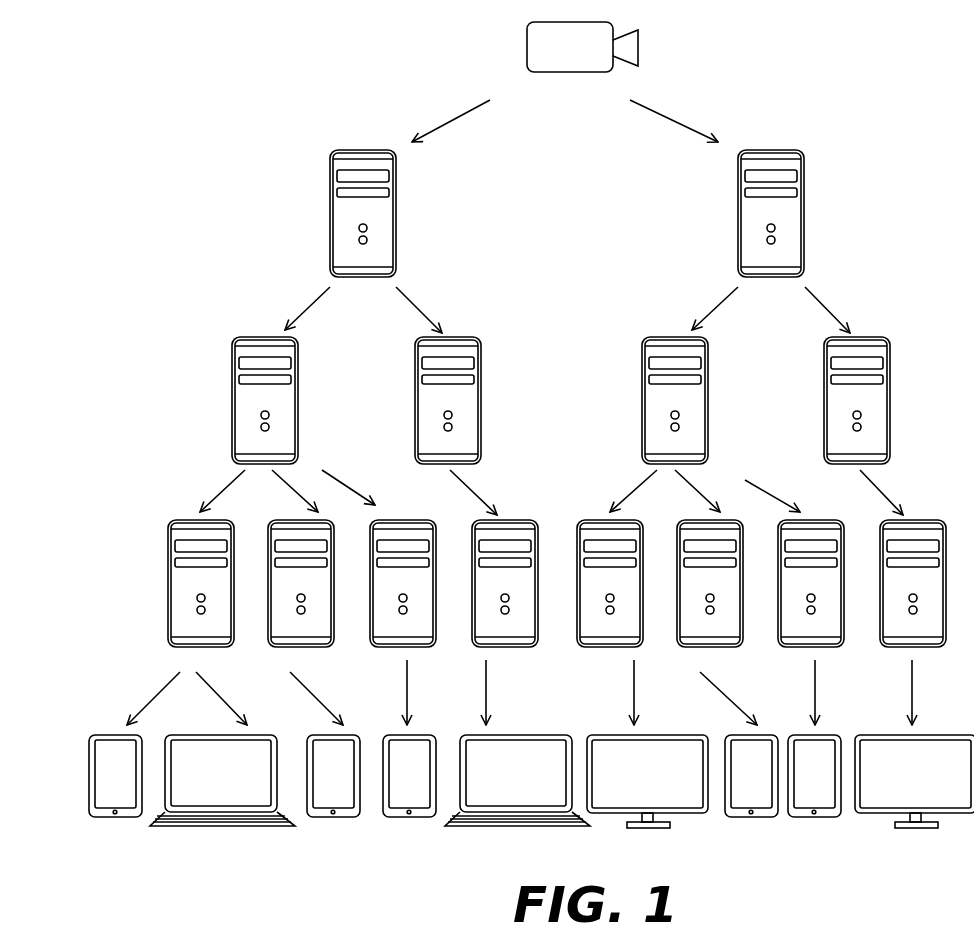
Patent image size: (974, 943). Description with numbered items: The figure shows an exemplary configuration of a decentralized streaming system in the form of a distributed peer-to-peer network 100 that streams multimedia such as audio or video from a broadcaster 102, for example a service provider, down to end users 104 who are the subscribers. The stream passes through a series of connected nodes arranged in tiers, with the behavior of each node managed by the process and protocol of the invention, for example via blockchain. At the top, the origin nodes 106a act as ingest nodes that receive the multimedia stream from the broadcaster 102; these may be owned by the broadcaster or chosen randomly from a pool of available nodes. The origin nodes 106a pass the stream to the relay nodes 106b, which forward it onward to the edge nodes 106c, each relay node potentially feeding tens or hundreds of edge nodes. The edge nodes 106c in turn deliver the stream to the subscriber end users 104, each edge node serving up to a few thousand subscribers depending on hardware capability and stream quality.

The distributed peer-to-peer network 100 is at (272, 120).
The broadcaster 102 is at (527, 52).
The end users 104 is at (89, 772).
The origin nodes 106a is at (330, 215).
The relay nodes 106b is at (232, 400).
The edge nodes 106c is at (167, 583).